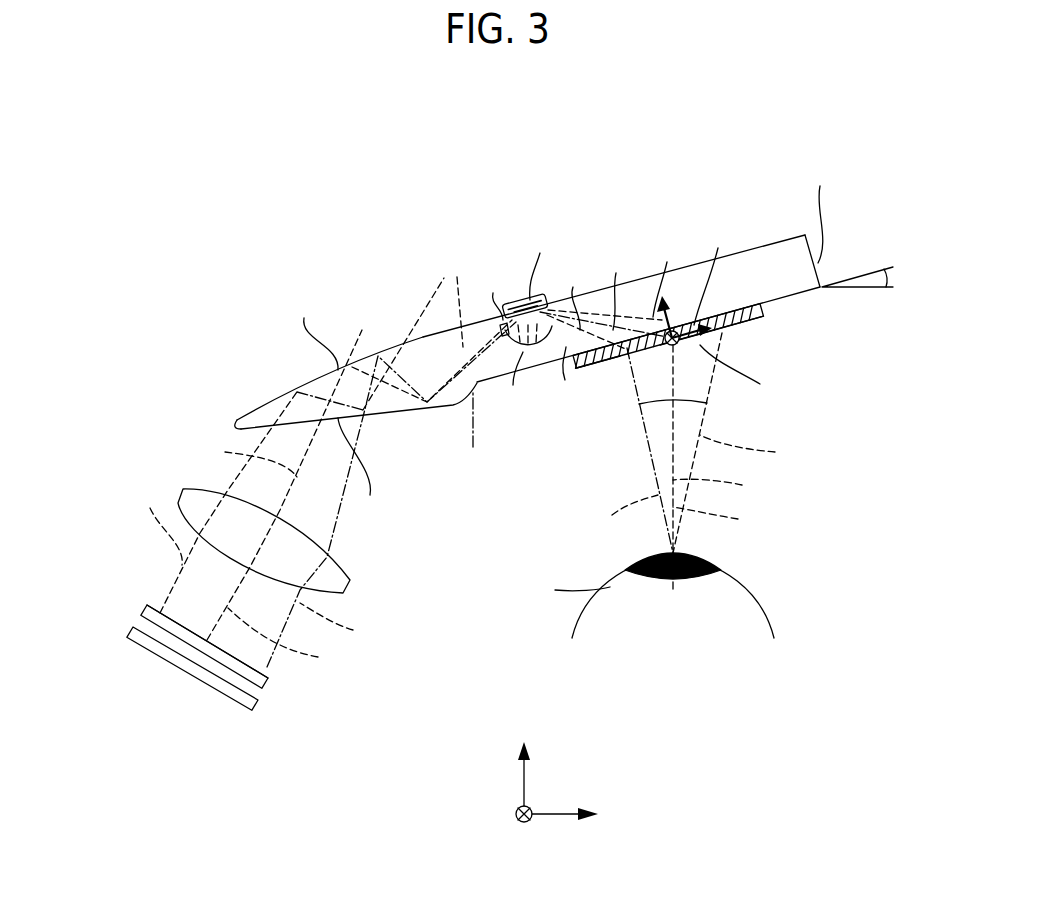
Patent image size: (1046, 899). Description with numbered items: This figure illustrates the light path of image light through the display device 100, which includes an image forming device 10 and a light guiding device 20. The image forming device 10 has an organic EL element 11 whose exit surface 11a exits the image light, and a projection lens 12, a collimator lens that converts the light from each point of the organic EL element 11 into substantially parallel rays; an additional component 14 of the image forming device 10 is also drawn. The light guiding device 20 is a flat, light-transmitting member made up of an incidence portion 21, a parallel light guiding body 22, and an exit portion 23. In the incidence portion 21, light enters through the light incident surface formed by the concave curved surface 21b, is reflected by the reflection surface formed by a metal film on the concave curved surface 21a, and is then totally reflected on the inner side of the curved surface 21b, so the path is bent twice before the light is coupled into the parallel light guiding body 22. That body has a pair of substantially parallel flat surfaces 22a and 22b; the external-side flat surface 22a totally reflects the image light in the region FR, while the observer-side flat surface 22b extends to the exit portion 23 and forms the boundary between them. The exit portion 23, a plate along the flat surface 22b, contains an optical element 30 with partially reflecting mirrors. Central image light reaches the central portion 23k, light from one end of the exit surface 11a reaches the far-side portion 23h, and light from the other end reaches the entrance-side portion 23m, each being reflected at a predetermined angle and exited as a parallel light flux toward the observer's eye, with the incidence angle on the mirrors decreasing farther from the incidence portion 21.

The display device 100 is at (732, 158).
The light guiding device 20 is at (481, 213).
The incidence portion 21 is at (421, 342).
The curved surface 21a is at (307, 381).
The curved surface 21b is at (387, 410).
The parallel light guiding body 22 is at (696, 277).
The flat surface 22a is at (640, 265).
The flat surface 22b is at (552, 362).
The exit portion 23 is at (711, 335).
The optical element 30 is at (748, 309).
The portion of the far side of the exit portion 23h is at (749, 318).
The central portion of the exit portion 23k is at (688, 336).
The portion of the entrance side of the exit portion 23m is at (577, 367).
The image forming device 10 is at (168, 690).
The organic electroluminescence element 11 is at (265, 682).
The exit surface 11a is at (203, 638).
The projection lens 12 is at (337, 583).
The backlight / display substrate 14 is at (257, 703).